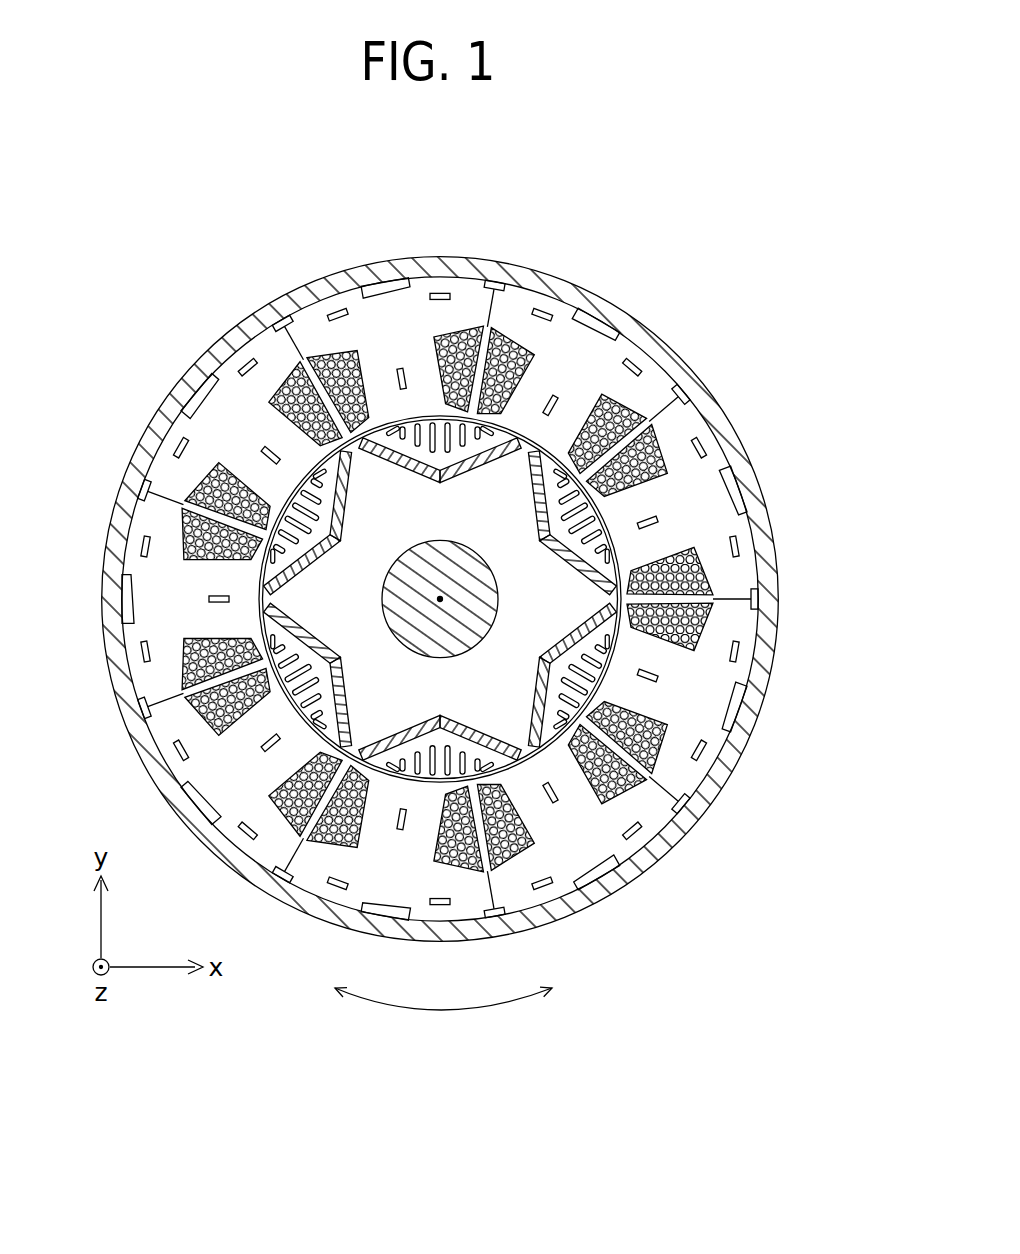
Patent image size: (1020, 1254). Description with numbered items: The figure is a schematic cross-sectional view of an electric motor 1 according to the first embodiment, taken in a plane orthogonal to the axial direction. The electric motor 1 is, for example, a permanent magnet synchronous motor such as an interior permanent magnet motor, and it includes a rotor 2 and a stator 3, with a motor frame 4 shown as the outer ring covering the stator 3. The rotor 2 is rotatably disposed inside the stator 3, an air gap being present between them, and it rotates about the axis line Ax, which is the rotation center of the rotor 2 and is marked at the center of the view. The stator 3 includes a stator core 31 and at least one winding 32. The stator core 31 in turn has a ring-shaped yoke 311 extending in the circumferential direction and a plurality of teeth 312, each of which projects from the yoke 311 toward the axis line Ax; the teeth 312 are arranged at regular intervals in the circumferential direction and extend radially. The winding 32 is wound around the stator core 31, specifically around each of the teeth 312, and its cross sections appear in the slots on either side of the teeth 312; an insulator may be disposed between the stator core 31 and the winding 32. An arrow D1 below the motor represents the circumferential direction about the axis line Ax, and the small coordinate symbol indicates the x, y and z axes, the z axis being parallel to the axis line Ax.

The electric motor 1 is at (144, 304).
The rotor 2 is at (393, 437).
The stator 3 is at (470, 186).
The stator core 31 is at (318, 221).
The yoke 311 is at (361, 327).
The teeth 312 is at (415, 373).
The winding 32 is at (450, 333).
The motor frame 4 is at (268, 306).
The axis line Ax is at (440, 602).
The circumferential direction D1 is at (440, 1011).